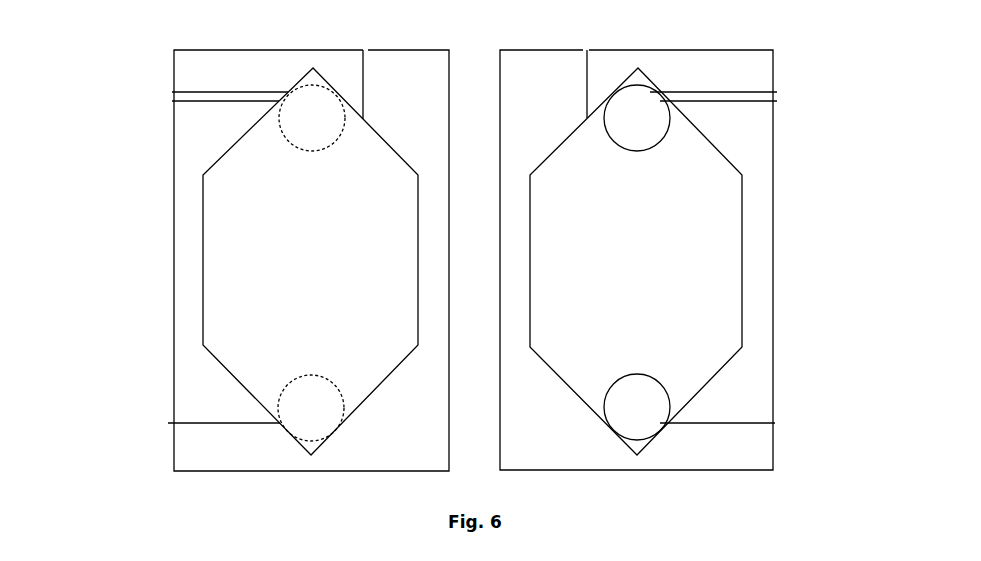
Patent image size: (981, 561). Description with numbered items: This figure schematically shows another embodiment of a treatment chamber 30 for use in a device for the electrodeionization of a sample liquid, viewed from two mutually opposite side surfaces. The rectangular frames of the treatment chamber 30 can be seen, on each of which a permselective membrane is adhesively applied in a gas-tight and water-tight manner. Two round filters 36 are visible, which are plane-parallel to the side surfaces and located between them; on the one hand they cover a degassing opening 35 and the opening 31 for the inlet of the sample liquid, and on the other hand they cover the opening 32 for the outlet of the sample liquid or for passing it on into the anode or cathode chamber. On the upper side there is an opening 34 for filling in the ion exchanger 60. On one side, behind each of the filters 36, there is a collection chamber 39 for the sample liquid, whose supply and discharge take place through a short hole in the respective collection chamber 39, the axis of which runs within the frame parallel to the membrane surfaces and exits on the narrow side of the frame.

The treatment chamber 30 is at (140, 45).
The opening for the inlet of the sample liquid 31 is at (789, 105).
The opening for the outlet of the sample liquid 32 is at (793, 423).
The opening for filling in the ion exchanger 34 is at (596, 40).
The degassing opening 35 is at (788, 81).
The round filters 36 is at (718, 262).
The collection chamber 39 is at (673, 139).
The ion exchanger 60 is at (728, 333).